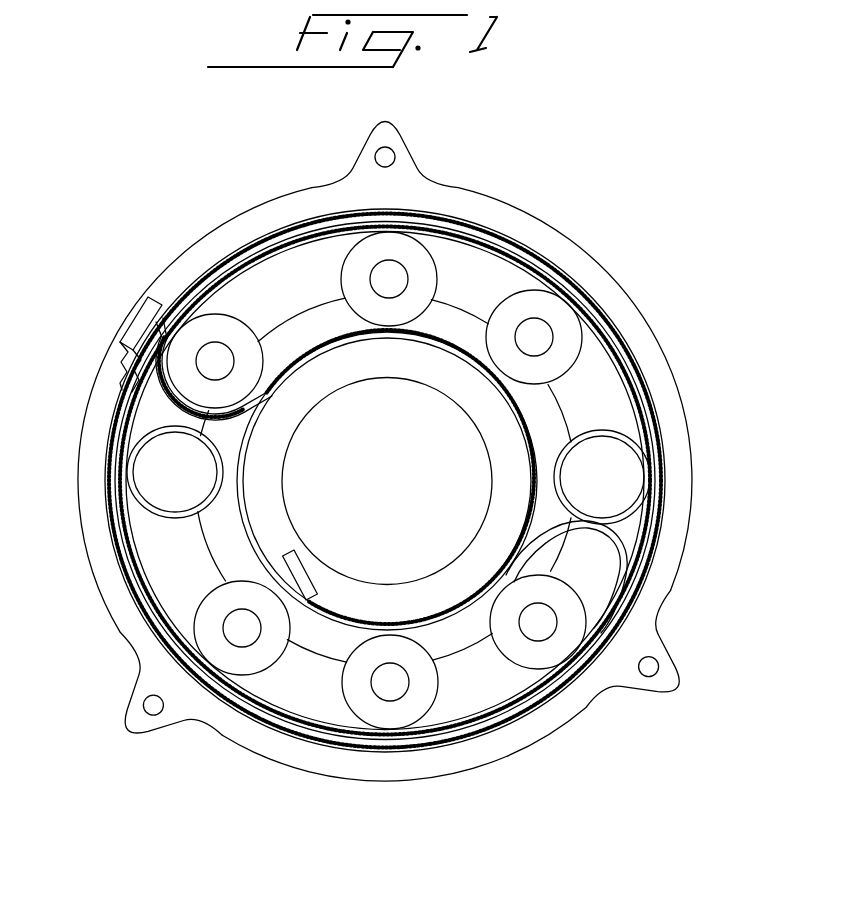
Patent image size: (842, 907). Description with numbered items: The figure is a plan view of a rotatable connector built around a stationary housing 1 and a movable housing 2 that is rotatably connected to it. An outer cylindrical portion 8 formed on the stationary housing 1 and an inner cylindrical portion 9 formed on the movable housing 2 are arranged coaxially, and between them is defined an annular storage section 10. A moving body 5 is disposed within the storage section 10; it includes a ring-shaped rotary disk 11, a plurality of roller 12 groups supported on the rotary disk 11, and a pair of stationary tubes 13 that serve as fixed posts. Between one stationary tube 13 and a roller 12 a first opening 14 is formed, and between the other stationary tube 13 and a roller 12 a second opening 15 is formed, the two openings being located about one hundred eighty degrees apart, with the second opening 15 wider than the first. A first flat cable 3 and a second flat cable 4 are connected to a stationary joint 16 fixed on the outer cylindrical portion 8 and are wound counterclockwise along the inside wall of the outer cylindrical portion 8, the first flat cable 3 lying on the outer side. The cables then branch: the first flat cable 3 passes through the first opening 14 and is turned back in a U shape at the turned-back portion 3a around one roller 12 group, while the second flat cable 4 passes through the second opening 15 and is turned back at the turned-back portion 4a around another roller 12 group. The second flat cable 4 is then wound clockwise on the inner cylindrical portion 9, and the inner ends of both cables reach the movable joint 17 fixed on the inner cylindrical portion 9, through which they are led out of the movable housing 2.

The stationary housing 1 is at (614, 262).
The movable housing 2 is at (461, 425).
The first flat cable 3 is at (486, 256).
The turned-back portion 3a is at (133, 419).
The second flat cable 4 is at (453, 625).
The turned-back portion 4a is at (622, 538).
The moving body 5 is at (262, 281).
The outer cylindrical portion 8 is at (95, 581).
The inner cylindrical portion 9 is at (390, 362).
The annular storage section 10 is at (518, 686).
The rotary disk 11 is at (612, 389).
The roller 12 is at (206, 329).
The stationary tube 13 is at (130, 497).
The first opening 14 is at (118, 378).
The second opening 15 is at (598, 544).
The stationary joint 16 is at (143, 316).
The movable joint 17 is at (306, 560).